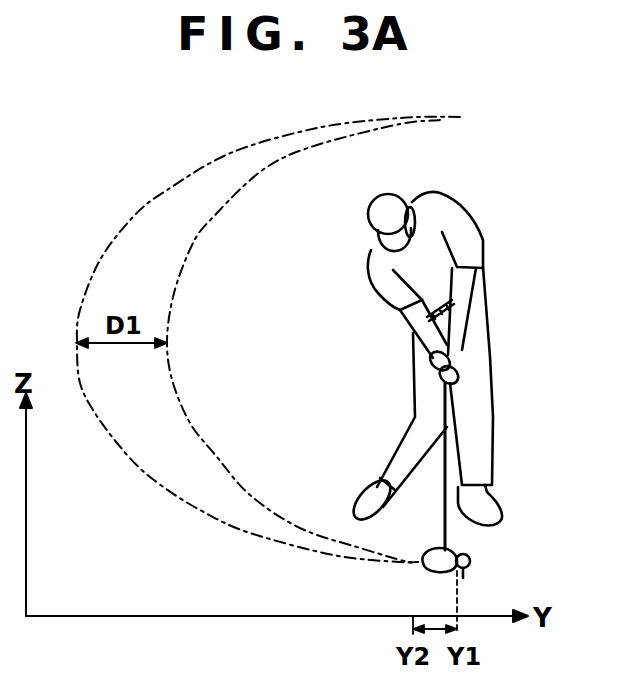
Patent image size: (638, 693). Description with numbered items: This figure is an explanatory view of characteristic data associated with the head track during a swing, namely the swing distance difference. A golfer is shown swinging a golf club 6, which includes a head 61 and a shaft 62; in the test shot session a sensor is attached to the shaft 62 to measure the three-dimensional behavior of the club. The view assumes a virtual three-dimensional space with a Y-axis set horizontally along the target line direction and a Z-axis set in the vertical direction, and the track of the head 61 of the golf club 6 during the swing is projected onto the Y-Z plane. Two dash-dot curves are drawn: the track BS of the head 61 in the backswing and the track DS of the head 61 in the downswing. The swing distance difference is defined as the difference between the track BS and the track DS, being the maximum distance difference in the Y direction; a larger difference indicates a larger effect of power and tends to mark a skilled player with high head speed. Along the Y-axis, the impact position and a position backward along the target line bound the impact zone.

The golf club 6 is at (492, 546).
The head 61 is at (432, 551).
The shaft 62 is at (450, 457).
The track of the head in a backswing BS is at (133, 217).
The track of the head in a downswing DS is at (200, 237).